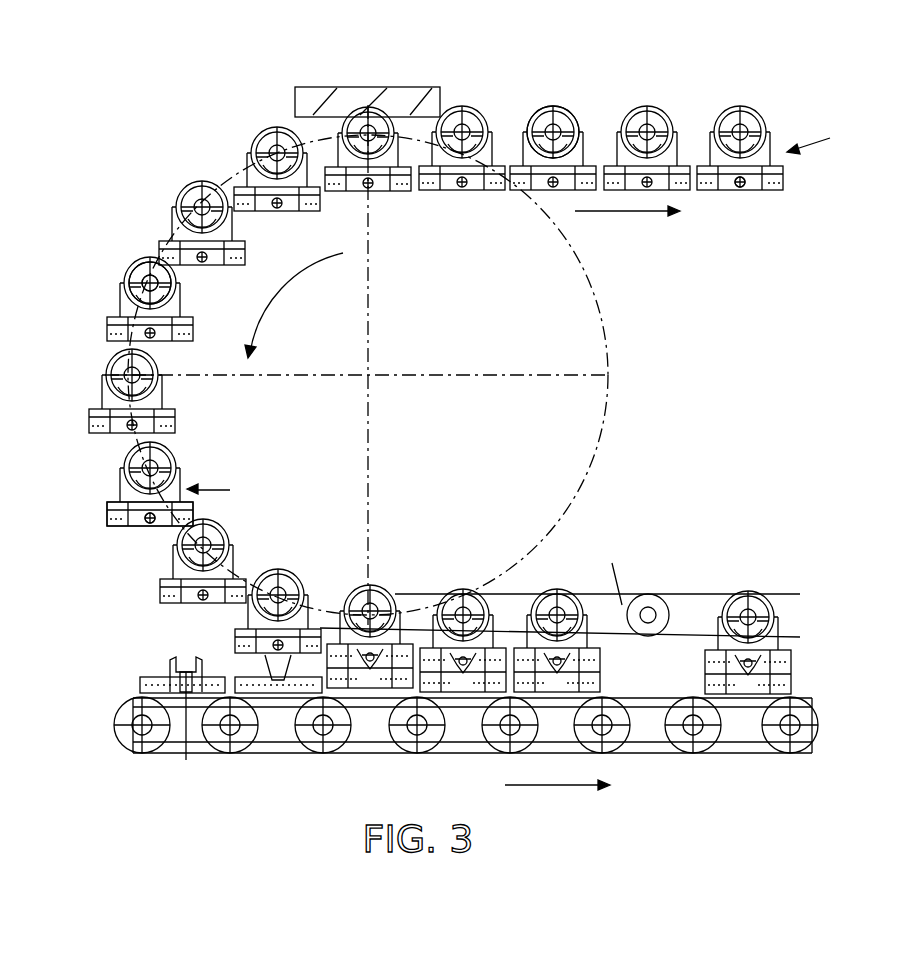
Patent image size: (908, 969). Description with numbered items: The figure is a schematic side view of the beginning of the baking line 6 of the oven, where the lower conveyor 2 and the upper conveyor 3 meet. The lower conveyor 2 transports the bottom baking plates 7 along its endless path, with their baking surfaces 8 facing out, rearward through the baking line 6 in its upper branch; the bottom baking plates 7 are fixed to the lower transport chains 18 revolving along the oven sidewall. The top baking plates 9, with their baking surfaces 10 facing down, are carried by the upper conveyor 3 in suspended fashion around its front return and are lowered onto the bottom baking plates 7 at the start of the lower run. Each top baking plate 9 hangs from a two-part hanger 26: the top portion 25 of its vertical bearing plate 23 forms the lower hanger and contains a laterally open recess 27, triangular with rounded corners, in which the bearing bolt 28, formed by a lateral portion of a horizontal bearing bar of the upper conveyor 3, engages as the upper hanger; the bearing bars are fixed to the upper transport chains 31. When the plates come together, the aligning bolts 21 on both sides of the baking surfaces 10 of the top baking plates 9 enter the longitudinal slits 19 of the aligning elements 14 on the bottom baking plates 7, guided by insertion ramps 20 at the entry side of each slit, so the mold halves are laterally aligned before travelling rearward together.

The lower conveyor 2 is at (278, 768).
The upper conveyor 3 is at (583, 100).
The baking line 6 is at (395, 572).
The bottom baking plate 7 is at (860, 627).
The baking surface 8 is at (142, 677).
The top baking plate 9 is at (792, 680).
The baking surface 10 is at (768, 192).
The aligning element 14 is at (178, 708).
The lower transport chain 18 is at (806, 748).
The longitudinal slit 19 is at (190, 664).
The insertion ramp 20 is at (172, 657).
The aligning bolt 21 is at (740, 190).
The vertical bearing plate 23 is at (175, 462).
The top portion of vertical bearing plate 25 is at (112, 306).
The two-part hanger 26 is at (523, 360).
The laterally open recess 27 is at (674, 610).
The bearing bolt 28 is at (648, 607).
The upper transport chain 31 is at (537, 108).